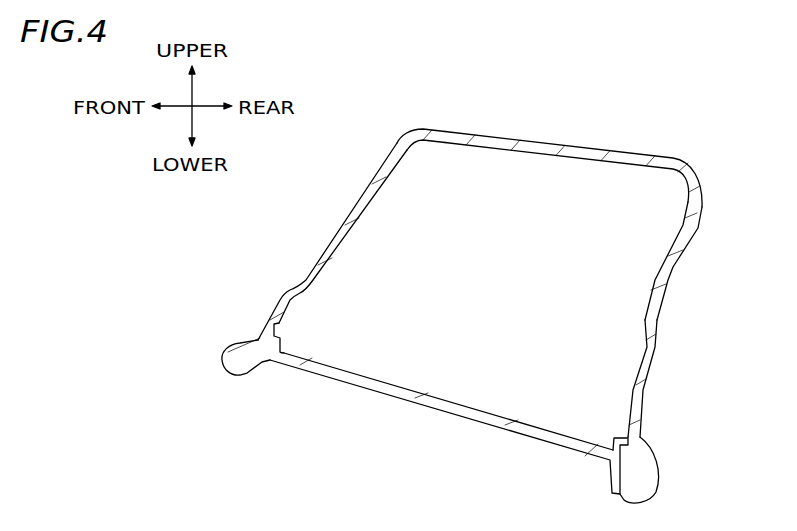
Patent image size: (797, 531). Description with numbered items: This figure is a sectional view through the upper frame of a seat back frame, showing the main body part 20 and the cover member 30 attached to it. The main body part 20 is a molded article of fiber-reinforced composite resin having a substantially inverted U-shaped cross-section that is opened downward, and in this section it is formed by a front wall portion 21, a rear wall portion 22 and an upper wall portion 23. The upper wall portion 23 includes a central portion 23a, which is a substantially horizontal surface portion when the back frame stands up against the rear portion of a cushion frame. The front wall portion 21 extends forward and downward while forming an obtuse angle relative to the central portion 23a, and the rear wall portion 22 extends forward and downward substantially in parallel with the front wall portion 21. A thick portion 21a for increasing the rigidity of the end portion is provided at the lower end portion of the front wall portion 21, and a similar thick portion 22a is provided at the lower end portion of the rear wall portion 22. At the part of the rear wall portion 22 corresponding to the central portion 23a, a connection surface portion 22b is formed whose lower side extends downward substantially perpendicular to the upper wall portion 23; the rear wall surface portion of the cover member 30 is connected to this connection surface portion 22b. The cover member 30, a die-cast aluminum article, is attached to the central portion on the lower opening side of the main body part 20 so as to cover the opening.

The main body part 20 is at (618, 151).
The front wall portion 21 is at (348, 217).
The thick portion 21a is at (233, 363).
The rear wall portion 22 is at (673, 267).
The thick portion 22a is at (642, 482).
The connection surface portion 22b is at (643, 397).
The upper wall portion 23 is at (530, 143).
The central portion 23a is at (453, 132).
The cover member 30 is at (462, 417).